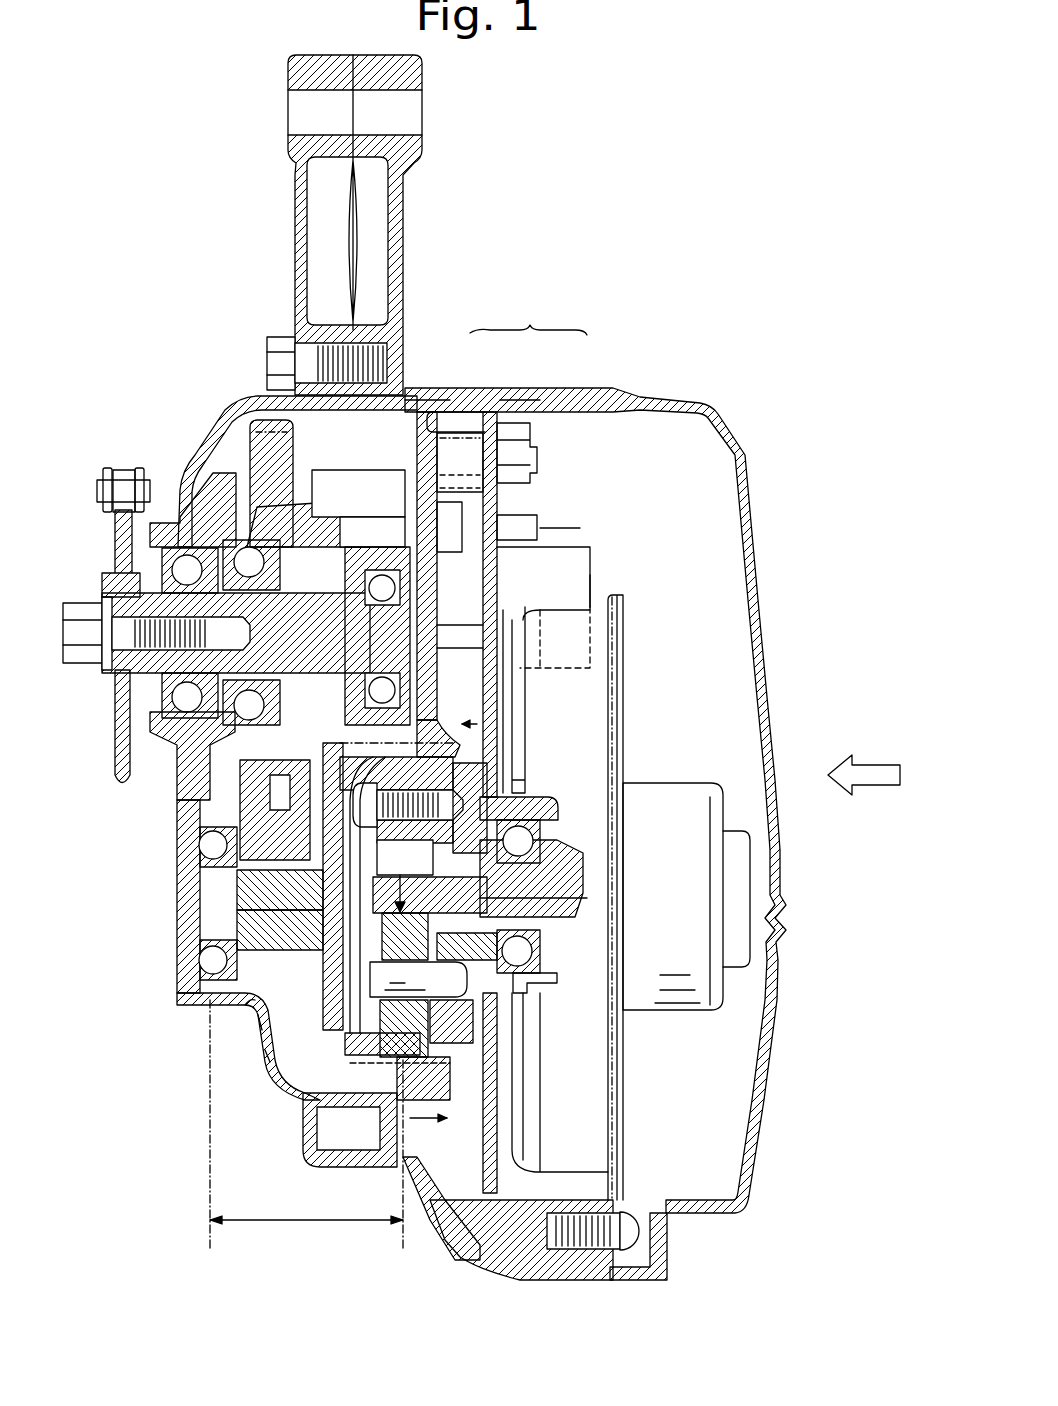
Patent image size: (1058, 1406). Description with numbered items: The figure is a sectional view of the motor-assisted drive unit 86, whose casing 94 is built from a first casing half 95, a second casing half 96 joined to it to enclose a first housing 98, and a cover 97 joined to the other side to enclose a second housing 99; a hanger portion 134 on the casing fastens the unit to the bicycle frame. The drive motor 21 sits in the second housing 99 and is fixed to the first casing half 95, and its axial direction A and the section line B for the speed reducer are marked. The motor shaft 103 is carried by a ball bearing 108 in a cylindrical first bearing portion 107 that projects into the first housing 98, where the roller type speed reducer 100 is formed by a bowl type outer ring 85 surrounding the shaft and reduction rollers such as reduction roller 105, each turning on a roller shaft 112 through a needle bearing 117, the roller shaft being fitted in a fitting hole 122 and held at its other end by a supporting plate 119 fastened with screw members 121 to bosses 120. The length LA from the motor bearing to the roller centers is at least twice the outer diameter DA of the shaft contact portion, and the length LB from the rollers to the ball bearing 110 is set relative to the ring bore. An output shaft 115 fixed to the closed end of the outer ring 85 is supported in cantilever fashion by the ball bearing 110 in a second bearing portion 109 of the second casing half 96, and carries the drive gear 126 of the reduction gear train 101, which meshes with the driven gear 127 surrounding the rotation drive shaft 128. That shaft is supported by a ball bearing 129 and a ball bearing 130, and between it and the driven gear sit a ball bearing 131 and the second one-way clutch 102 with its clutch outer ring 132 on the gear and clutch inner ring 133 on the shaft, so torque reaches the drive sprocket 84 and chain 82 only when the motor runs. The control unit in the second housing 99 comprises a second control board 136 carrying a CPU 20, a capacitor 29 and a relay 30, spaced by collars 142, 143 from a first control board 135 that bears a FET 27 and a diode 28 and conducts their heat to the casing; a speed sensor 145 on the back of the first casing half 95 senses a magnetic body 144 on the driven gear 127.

The hanger portion 134 is at (288, 153).
The magnetic body 144 is at (300, 398).
The driven gear 127 is at (268, 402).
The collar 142 is at (460, 445).
The speed sensor 145 is at (437, 400).
The casing 94 is at (528, 312).
The second casing half 96 is at (450, 388).
The first casing half 95 is at (515, 396).
The cover 97 is at (648, 398).
The first housing 98 is at (345, 444).
The chain 82 is at (104, 472).
The ball bearing 131 is at (192, 492).
The second one-way clutch 102 is at (290, 562).
The clutch outer ring 132 is at (358, 493).
The ball bearing 130 is at (372, 532).
The FET 27 is at (500, 470).
The diode 28 is at (537, 522).
The capacitor 29 is at (493, 572).
The second control board 136 is at (497, 577).
The relay 30 is at (590, 572).
The second housing 99 is at (733, 629).
The CPU 20 is at (508, 620).
The first control board 135 is at (445, 626).
The collar 143 is at (482, 647).
The ball bearing 129 is at (114, 556).
The clutch inner ring 133 is at (335, 682).
The rotation drive shaft 128 is at (108, 690).
The drive sprocket 84 is at (118, 770).
The reduction gear train 101 is at (178, 801).
The screw member 121 is at (243, 790).
The ball bearing 110 is at (180, 843).
The supporting plate 119 is at (330, 890).
The motor shaft 103 is at (370, 912).
The output shaft 115 is at (200, 917).
The second bearing portion 109 is at (177, 994).
The drive gear 126 is at (237, 1005).
The roller type speed reducer 100 is at (252, 1023).
The roller shaft 112 is at (255, 1045).
The motor-assisted drive unit 86 is at (260, 1080).
The outer ring 85 is at (307, 1127).
The boss 120 is at (455, 772).
The drive motor 21 is at (675, 783).
The ball bearing 108 is at (563, 960).
The first bearing portion 107 is at (500, 995).
The fitting hole 122 is at (490, 988).
The reduction roller 105 is at (470, 1038).
The needle bearing 117 is at (470, 1050).
The axial direction A is at (870, 760).
The section line B- B is at (443, 922).
The outer diameter DA is at (405, 876).
The length LA is at (587, 900).
The length LB is at (306, 1125).